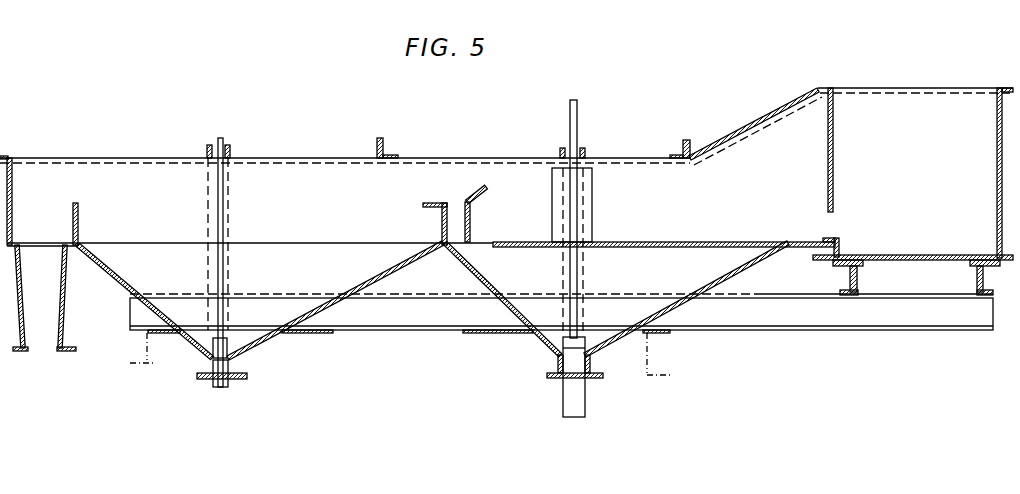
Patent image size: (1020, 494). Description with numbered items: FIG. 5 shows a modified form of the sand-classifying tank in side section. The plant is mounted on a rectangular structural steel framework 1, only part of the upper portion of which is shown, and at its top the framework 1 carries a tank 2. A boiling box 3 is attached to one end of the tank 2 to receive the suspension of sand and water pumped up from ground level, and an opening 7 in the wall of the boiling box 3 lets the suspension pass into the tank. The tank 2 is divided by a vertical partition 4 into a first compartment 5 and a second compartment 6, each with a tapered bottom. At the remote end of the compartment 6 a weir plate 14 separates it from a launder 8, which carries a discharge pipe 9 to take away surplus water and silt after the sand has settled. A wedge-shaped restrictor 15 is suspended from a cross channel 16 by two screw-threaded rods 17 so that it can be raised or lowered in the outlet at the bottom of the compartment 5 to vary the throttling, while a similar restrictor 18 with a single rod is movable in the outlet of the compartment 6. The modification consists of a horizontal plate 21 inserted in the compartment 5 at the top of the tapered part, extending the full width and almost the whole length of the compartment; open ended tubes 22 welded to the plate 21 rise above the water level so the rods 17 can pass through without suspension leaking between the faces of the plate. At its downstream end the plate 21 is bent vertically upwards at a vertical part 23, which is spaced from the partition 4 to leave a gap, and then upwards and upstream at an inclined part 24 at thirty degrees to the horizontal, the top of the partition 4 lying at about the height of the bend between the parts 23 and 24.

The framework 1 is at (859, 283).
The tank 2 is at (542, 168).
The boiling box 3 is at (905, 174).
The vertical partition 4 is at (440, 242).
The first compartment 5 is at (553, 312).
The second compartment 6 is at (282, 312).
The opening 7 is at (825, 223).
The launder 8 is at (37, 232).
The discharge pipe 9 is at (42, 283).
The weir plate 14 is at (80, 215).
The wedge-shaped restrictor 15 is at (580, 398).
The cross channel 16 is at (583, 152).
The rods 17 is at (578, 112).
The restrictor 18 is at (230, 362).
The horizontal plate 21 is at (653, 238).
The open ended tubes 22 is at (580, 212).
The vertical part 23 is at (471, 218).
The inclined part 24 is at (483, 186).